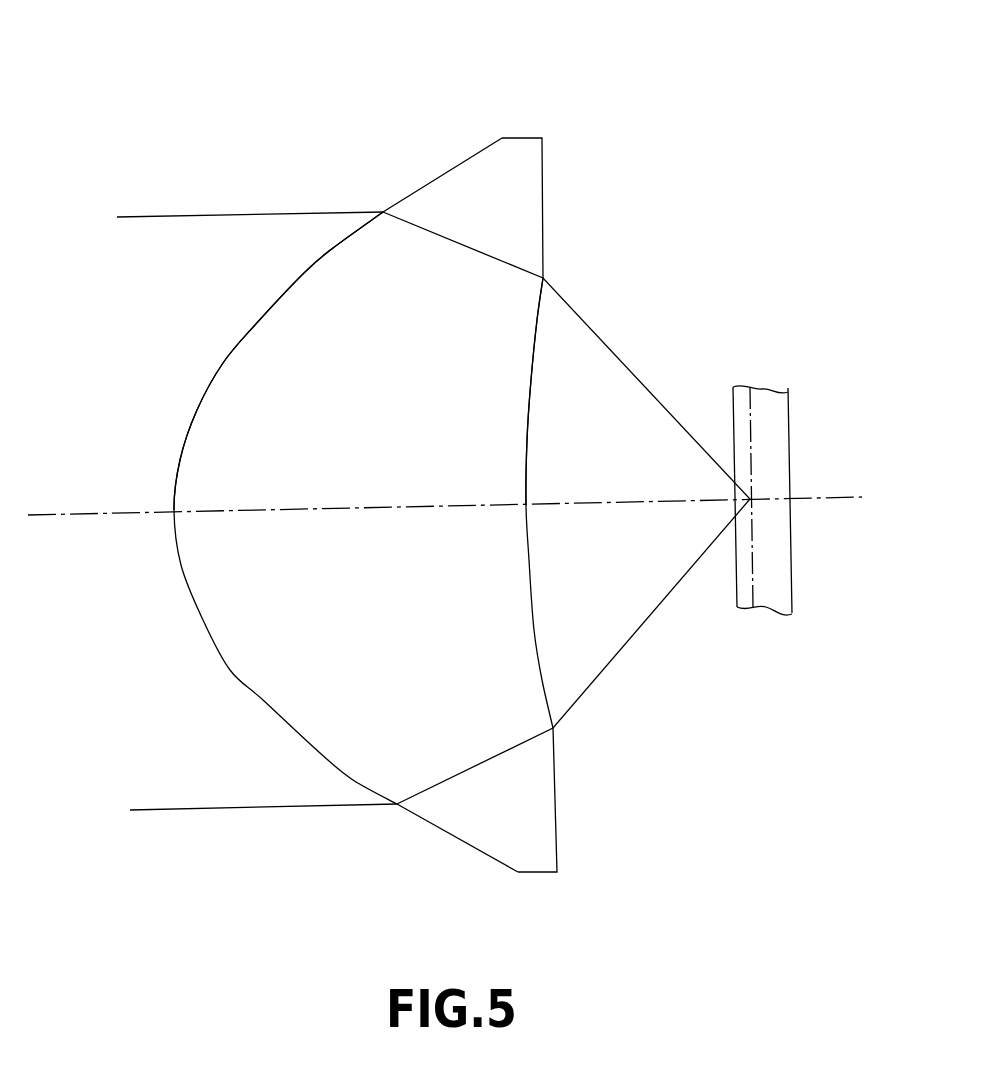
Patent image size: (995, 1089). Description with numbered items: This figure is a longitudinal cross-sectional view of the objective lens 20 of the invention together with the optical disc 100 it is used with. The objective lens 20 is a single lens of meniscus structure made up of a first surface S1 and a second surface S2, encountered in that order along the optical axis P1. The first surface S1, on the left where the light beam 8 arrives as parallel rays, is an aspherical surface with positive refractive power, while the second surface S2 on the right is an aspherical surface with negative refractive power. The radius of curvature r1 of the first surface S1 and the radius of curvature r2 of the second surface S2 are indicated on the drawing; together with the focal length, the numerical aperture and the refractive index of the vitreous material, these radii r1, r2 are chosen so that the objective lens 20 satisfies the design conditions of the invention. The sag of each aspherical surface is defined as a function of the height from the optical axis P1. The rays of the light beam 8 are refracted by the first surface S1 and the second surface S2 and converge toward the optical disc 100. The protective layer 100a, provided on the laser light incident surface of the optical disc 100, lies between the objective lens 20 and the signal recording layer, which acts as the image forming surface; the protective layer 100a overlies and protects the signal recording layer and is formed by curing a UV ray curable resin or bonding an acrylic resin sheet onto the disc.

The objective lens 20 is at (462, 443).
The first surface S1 is at (330, 247).
The radius of curvature of the first surface r1 is at (303, 272).
The second surface S2 is at (537, 320).
The radius of curvature of the second surface r2 is at (526, 398).
The light beam 8 is at (208, 810).
The optical axis P1 is at (62, 515).
The optical disc 100 is at (785, 522).
The protective layer 100a is at (748, 597).